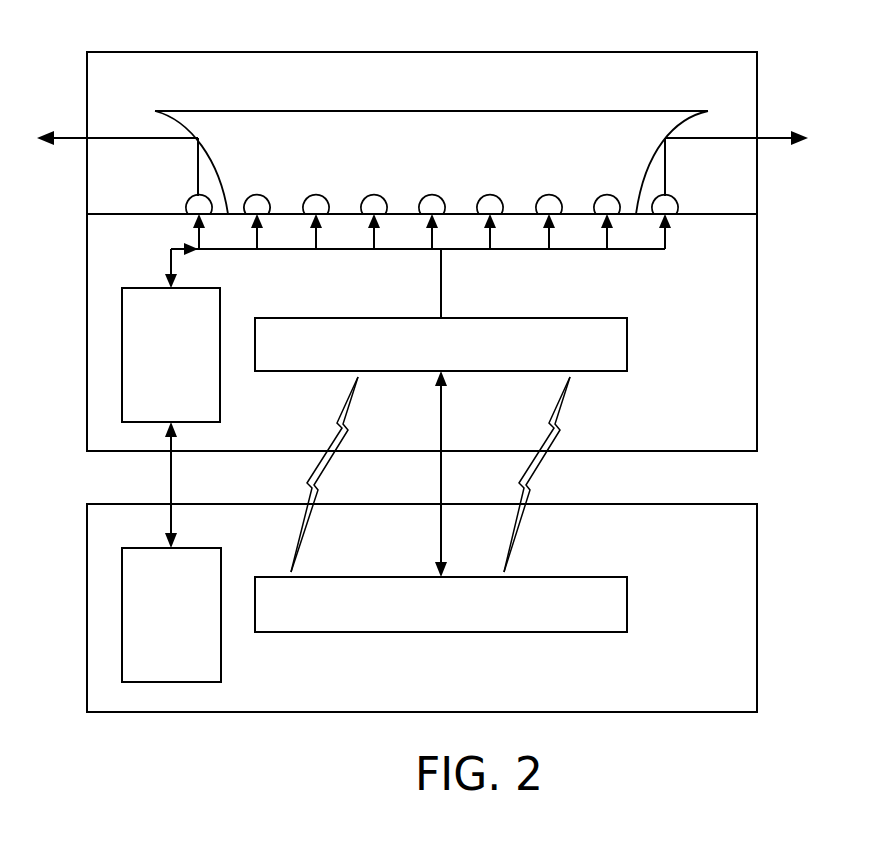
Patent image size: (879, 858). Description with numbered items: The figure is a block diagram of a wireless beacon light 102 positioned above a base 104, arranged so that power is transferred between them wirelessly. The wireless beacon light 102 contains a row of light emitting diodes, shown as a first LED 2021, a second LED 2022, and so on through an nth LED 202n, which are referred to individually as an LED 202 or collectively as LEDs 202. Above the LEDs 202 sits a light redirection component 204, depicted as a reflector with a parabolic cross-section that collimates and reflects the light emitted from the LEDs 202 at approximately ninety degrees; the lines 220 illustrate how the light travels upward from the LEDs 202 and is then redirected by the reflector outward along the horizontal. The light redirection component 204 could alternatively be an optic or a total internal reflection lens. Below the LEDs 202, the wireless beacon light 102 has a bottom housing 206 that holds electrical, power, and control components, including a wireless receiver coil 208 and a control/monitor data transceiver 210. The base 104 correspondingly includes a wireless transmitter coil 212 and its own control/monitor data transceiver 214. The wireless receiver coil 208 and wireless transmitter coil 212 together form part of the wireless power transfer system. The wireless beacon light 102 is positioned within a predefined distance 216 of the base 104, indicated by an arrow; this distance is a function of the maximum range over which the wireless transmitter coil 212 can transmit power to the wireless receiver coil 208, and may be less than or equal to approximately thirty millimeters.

The wireless beacon light 102 is at (658, 52).
The base 104 is at (657, 503).
The light emitting diode 202 is at (432, 173).
The first light emitting diode 2021 is at (257, 195).
The second light emitting diode 2022 is at (315, 195).
The nth light emitting diode 202n is at (657, 195).
The light redirection component 204 is at (437, 111).
The bottom housing 206 is at (757, 330).
The wireless receiver coil 208 is at (627, 344).
The control/monitor data transceiver (Tx/Rx) 210 is at (220, 398).
The wireless transmitter coil 212 is at (627, 604).
The control/monitor data transceiver (Tx/Rx) 214 is at (221, 660).
The predefined distance 216 is at (442, 421).
The lines 220 is at (72, 136).